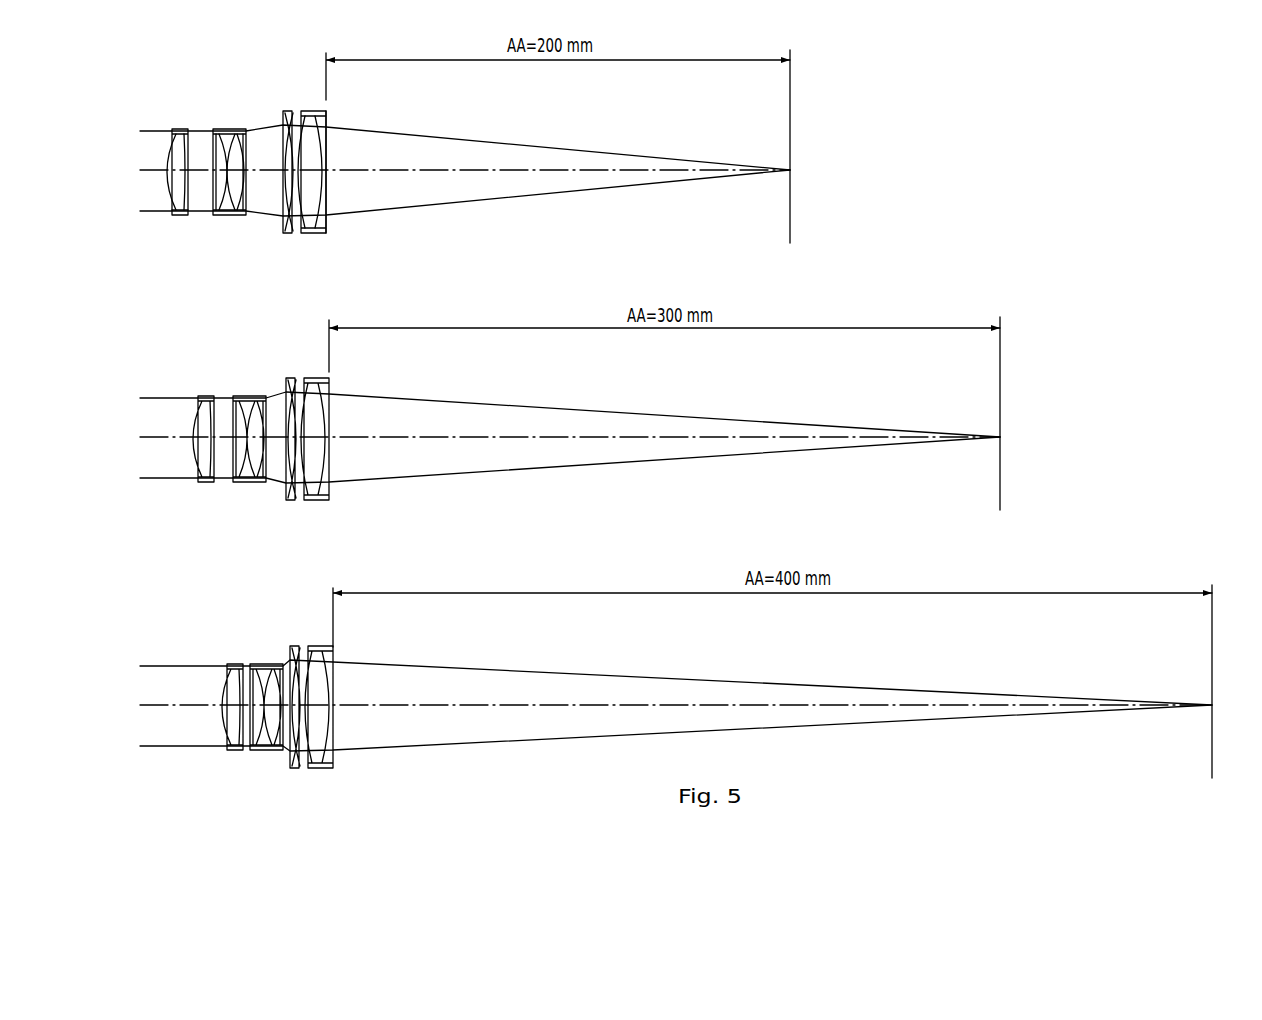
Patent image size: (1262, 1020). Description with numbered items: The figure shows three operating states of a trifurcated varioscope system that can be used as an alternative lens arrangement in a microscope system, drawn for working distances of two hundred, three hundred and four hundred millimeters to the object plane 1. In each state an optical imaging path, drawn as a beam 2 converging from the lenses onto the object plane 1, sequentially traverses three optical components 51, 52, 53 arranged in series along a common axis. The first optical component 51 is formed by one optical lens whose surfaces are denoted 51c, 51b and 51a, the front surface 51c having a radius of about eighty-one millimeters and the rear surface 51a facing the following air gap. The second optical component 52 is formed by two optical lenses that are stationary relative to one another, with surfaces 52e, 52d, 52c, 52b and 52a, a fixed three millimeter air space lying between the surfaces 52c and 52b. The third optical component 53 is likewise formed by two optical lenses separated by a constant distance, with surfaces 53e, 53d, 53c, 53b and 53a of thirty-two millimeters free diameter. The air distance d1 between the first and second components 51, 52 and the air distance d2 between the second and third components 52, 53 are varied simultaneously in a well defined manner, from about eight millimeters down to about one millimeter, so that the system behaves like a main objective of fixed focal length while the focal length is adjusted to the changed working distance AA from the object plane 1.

The object plane 1 is at (790, 126).
The light beam 2 is at (557, 169).
The first optical component 51 is at (175, 438).
The surface of first optical component 51a is at (164, 225).
The surface of first optical component 51b is at (153, 172).
The surface of first optical component 51c is at (141, 172).
The second optical component 52 is at (235, 427).
The surface of second optical component 52a is at (258, 148).
The surface of second optical component 52b is at (249, 133).
The surface of second optical component 52c is at (228, 148).
The surface of second optical component 52d is at (207, 133).
The surface of second optical component 52e is at (206, 150).
The third optical component 53 is at (328, 446).
The surface of third optical component 53a is at (356, 178).
The surface of third optical component 53b is at (336, 190).
The surface of third optical component 53c is at (309, 196).
The surface of third optical component 53d is at (295, 207).
The surface of third optical component 53e is at (282, 189).
The air distance d1 is at (202, 224).
The air distance d2 is at (265, 224).